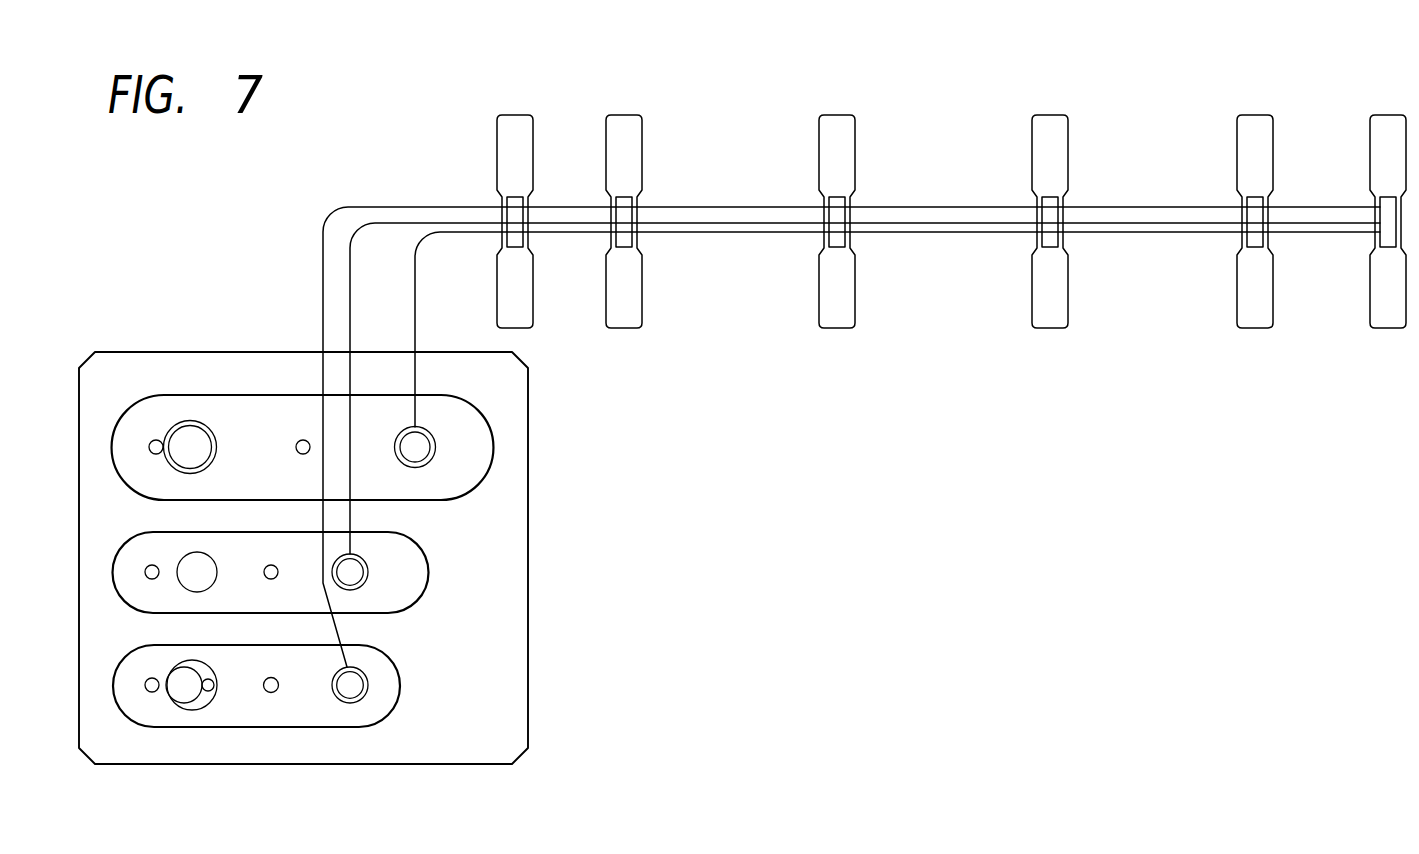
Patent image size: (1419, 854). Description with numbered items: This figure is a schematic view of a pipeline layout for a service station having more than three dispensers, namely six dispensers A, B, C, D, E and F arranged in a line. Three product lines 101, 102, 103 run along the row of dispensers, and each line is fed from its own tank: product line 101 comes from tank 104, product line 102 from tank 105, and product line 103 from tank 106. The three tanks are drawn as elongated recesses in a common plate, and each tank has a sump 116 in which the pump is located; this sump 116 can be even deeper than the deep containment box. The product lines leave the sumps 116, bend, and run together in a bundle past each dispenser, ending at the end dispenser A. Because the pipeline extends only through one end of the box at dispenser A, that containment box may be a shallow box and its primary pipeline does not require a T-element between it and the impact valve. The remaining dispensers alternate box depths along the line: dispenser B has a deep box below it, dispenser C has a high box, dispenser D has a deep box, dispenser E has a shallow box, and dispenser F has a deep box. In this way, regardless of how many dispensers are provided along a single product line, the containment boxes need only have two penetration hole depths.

The product line 101 is at (363, 207).
The product line 102 is at (412, 223).
The product line 103 is at (480, 232).
The tank 104 is at (402, 688).
The tank 105 is at (428, 575).
The tank 106 is at (495, 450).
The sump 116 is at (433, 458).
The dispenser A is at (1383, 330).
The dispenser B is at (1237, 285).
The dispenser C is at (1070, 283).
The dispenser D is at (857, 282).
The dispenser E is at (643, 285).
The dispenser F is at (533, 297).